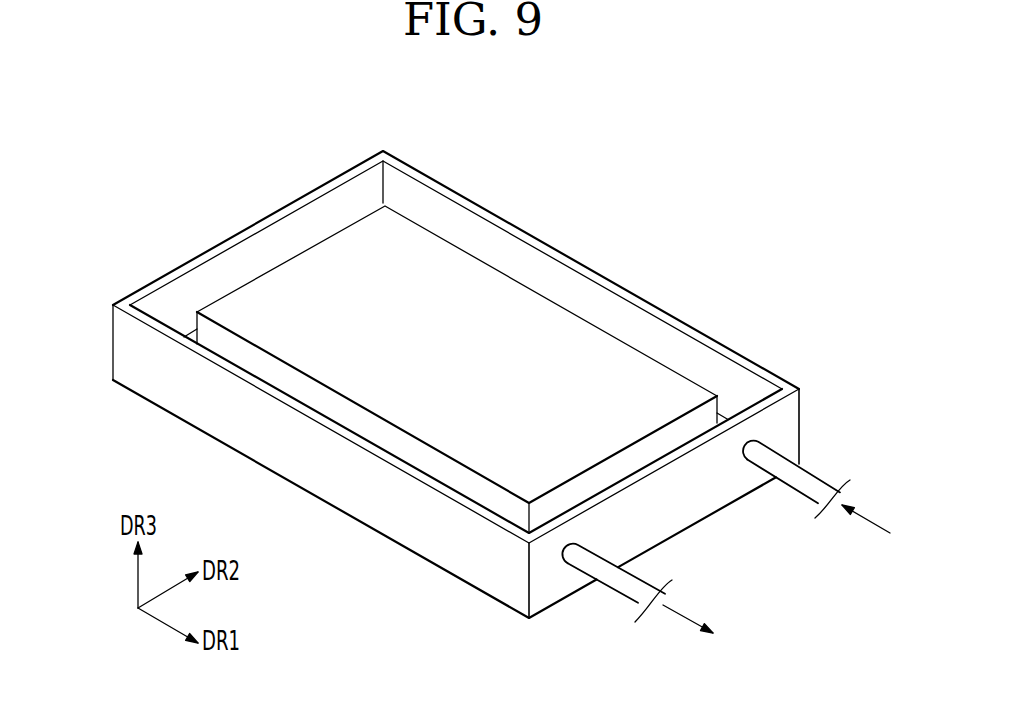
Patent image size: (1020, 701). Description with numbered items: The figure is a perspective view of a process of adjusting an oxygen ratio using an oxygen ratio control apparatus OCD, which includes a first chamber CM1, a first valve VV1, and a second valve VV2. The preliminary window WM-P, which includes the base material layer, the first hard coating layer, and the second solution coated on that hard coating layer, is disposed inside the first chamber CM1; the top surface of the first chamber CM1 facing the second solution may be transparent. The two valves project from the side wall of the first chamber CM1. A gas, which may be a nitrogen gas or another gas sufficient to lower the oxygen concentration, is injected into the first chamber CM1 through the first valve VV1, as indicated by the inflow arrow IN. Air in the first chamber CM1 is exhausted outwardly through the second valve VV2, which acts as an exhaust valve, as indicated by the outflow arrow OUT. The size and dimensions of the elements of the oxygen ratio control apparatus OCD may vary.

The oxygen ratio control apparatus OCD is at (683, 171).
The first chamber CM1 is at (127, 340).
The preliminary window WM-P is at (545, 311).
The first valve VV1 is at (815, 486).
The second valve VV2 is at (636, 593).
The inflow direction IN is at (884, 526).
The outflow direction OUT is at (710, 629).